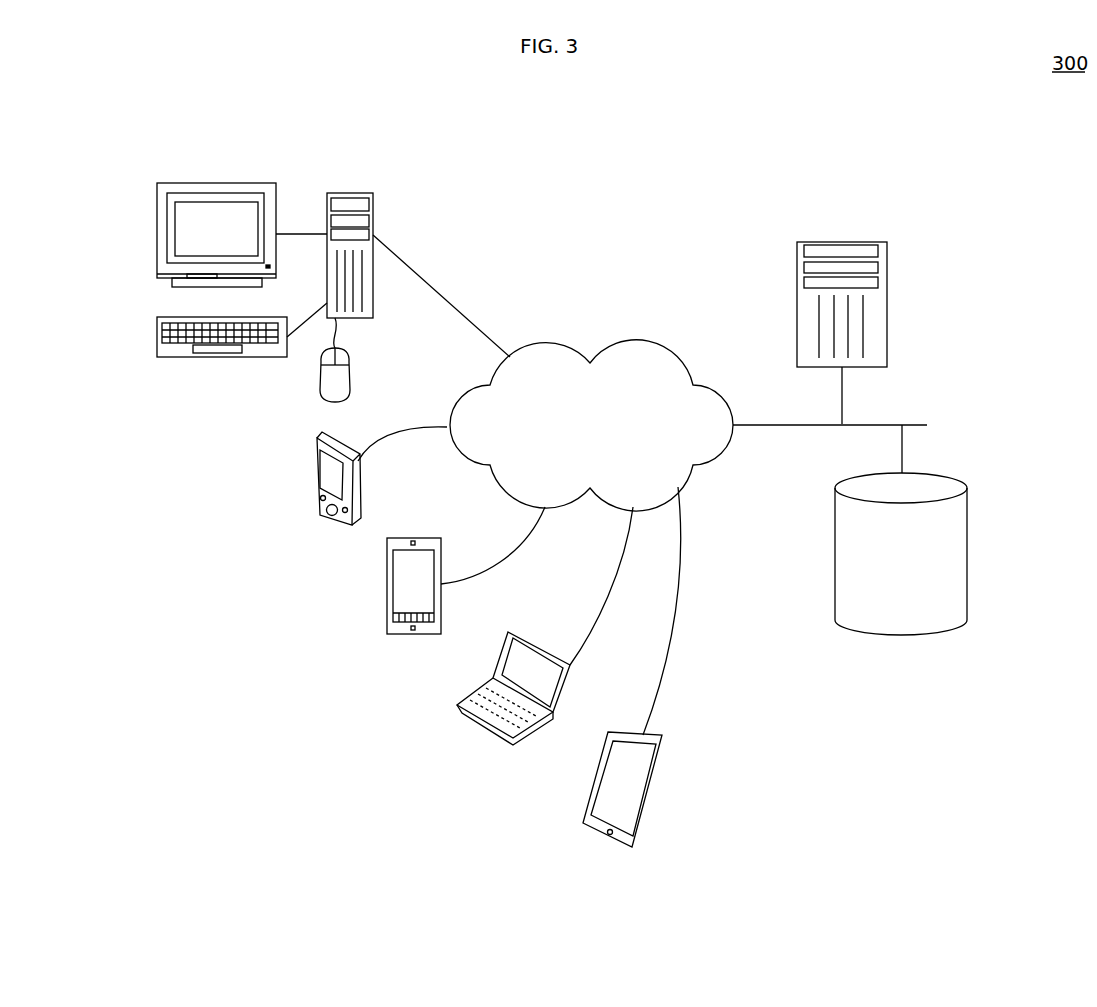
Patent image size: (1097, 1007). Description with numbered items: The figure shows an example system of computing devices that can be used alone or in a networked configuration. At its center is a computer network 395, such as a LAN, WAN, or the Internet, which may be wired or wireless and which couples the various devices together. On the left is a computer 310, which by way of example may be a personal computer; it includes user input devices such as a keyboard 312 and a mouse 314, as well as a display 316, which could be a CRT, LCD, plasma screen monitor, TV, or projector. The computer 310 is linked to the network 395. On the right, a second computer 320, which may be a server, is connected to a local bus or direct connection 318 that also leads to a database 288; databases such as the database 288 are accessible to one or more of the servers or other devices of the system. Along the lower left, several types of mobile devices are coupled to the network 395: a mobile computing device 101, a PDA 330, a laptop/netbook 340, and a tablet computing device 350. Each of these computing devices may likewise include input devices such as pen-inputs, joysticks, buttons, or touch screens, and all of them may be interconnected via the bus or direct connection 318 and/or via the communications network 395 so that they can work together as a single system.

The computer 310 is at (375, 193).
The keyboard 312 is at (157, 335).
The mouse 314 is at (350, 373).
The display 316 is at (157, 231).
The computer network 395 is at (578, 350).
The computer 320 is at (887, 305).
The local bus or direct connection 318 is at (893, 424).
The database 288 is at (967, 568).
The PDA 330 is at (317, 492).
The mobile computing device 101 is at (387, 612).
The laptop/netbook 340 is at (457, 700).
The tablet computing device 350 is at (583, 820).